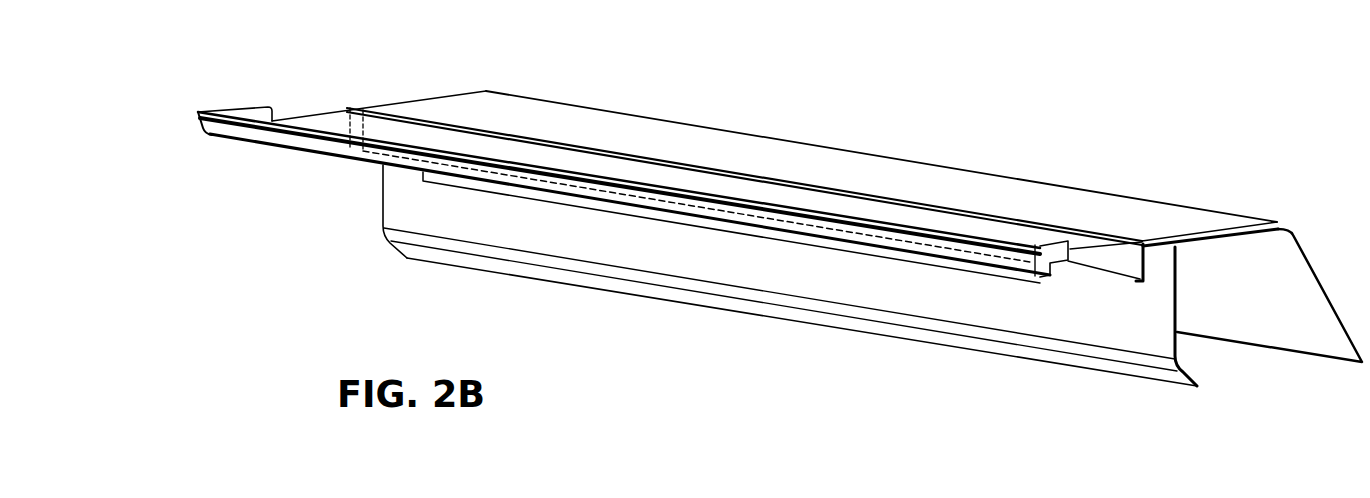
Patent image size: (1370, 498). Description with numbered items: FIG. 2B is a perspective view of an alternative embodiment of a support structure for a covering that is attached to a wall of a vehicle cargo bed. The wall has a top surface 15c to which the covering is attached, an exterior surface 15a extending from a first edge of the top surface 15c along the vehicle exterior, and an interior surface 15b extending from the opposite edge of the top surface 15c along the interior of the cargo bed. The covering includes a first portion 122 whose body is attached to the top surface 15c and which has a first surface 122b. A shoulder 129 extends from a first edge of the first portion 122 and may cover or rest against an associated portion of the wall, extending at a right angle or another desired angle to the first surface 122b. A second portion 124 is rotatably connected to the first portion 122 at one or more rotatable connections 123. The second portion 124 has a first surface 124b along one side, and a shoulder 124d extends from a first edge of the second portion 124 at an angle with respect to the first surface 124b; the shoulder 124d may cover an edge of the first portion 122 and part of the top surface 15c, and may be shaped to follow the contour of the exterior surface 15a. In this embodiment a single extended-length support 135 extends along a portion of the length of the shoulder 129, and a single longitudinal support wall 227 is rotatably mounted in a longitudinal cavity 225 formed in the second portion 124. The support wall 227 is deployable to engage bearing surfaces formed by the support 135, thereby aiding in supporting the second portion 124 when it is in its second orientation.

The first portion 122 is at (1038, 200).
The first surface 122b is at (670, 140).
The rotatable connection 123 is at (562, 143).
The second portion 124 is at (275, 157).
The first surface 124b is at (323, 125).
The shoulder 124d is at (330, 145).
The longitudinal cavity 225 is at (357, 110).
The longitudinal support wall 227 is at (931, 238).
The shoulder 129 is at (1090, 273).
The extended-length support 135 is at (870, 252).
The exterior surface 15a is at (1332, 300).
The interior surface 15b is at (993, 302).
The top surface 15c is at (1217, 242).